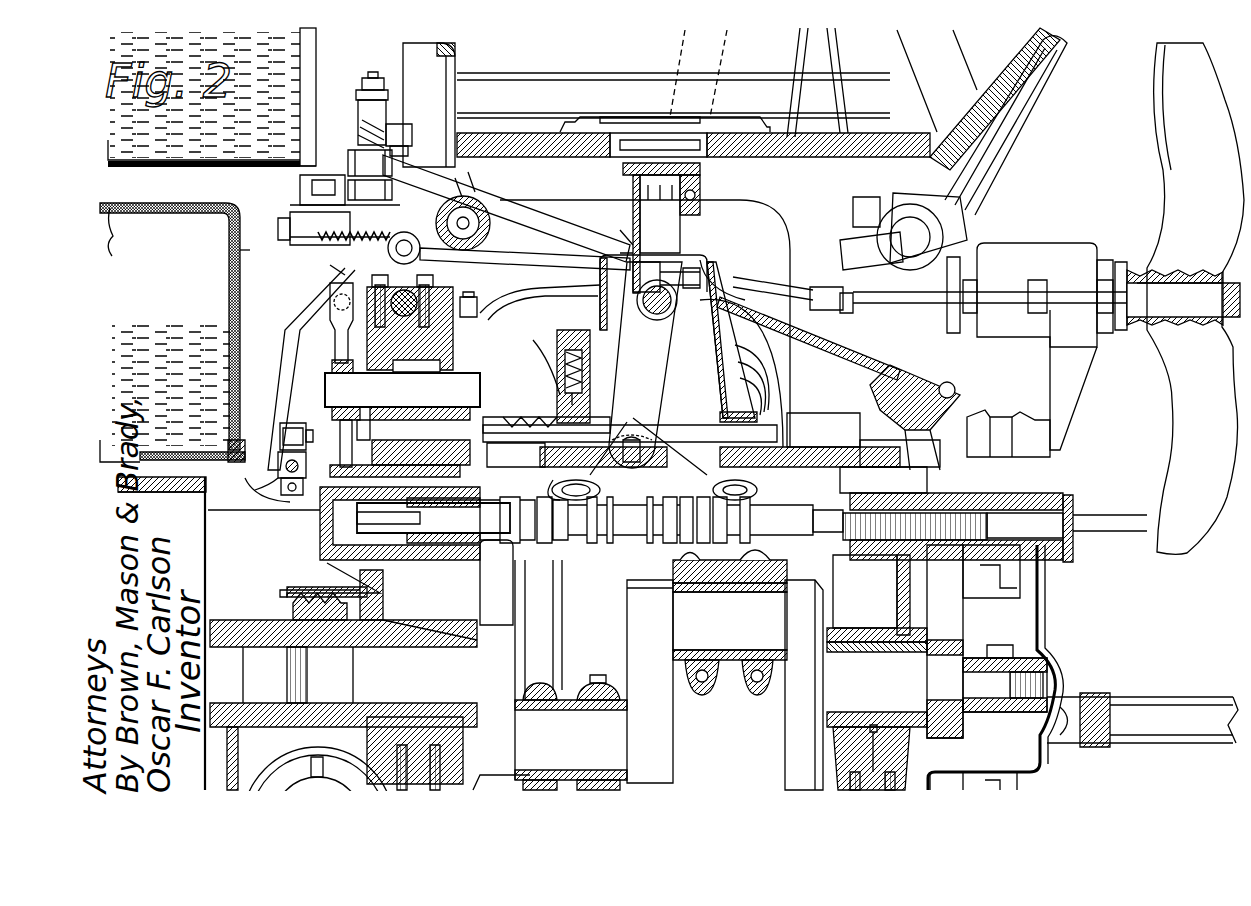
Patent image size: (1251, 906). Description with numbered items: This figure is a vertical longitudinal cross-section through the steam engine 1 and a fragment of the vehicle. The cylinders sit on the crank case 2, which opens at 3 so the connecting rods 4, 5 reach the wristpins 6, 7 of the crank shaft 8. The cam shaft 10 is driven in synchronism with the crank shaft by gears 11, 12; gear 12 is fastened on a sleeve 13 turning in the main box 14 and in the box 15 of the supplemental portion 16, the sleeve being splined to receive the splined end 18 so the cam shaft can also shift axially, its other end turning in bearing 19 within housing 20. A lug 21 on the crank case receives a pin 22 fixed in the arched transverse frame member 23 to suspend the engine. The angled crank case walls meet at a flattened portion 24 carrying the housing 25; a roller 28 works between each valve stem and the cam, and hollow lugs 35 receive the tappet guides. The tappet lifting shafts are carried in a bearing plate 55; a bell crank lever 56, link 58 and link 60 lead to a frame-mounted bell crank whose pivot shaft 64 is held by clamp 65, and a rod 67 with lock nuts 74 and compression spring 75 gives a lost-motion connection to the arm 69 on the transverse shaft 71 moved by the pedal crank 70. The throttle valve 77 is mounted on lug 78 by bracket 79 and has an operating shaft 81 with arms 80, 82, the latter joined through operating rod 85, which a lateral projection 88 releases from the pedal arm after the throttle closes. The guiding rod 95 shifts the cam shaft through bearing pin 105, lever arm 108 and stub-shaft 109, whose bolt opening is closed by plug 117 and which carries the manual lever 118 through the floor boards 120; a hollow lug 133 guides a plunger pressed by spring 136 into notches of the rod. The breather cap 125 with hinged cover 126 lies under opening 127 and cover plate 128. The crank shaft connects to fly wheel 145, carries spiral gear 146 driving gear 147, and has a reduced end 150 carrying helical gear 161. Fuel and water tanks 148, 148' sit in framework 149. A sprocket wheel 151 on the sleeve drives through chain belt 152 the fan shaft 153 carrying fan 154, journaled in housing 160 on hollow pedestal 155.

The steam engine 1 is at (735, 215).
The crank case 2 is at (340, 590).
The opening 3 is at (565, 575).
The connecting rod 4 is at (540, 630).
The connecting rod 5 is at (680, 575).
The wristpin 6 is at (720, 670).
The wristpin 7 is at (490, 765).
The crank shaft 8 is at (480, 660).
The cam shaft 10 is at (770, 530).
The gear 11 is at (955, 740).
The gear 12 is at (940, 570).
The sleeve 13 is at (880, 500).
The main box 14 is at (900, 510).
The box 15 is at (1050, 495).
The supplemental portion of the crank case 16 is at (1045, 600).
The splined end of the cam shaft 18 is at (845, 545).
The bearing 19 is at (553, 482).
The housing 20 is at (390, 565).
The lug 21 is at (430, 355).
The pin 22 is at (388, 382).
The transverse frame member 23 is at (340, 332).
The flattened portion 24 is at (830, 520).
The housing 25 is at (720, 337).
The roller 28 is at (625, 428).
The hollow lug 35 is at (560, 515).
The bearing plate 55 is at (310, 500).
The bell crank lever 56 is at (300, 432).
The link 58 is at (292, 478).
The link 60 is at (340, 342).
The shaft 64 is at (372, 305).
The clamp 65 is at (445, 296).
The rod 67 is at (820, 322).
The arm 69 is at (930, 255).
The pedal crank 70 is at (1030, 108).
The transverse shaft 71 is at (880, 240).
The lock nuts 74 is at (290, 238).
The compression spring 75 is at (340, 237).
The throttle valve 77 is at (290, 195).
The lug 78 is at (520, 230).
The bracket 79 is at (510, 185).
The arm 80 is at (390, 112).
The operating shaft 81 is at (372, 80).
The arm 82 is at (412, 132).
The operating rod 85 is at (850, 352).
The lateral projection 88 is at (900, 390).
The guiding rod 95 is at (525, 410).
The bearing pin 105 is at (690, 467).
The lever arm 108 is at (640, 395).
The stub-shaft 109 is at (595, 260).
The plug 117 is at (720, 266).
The manual lever 118 is at (692, 30).
The floor boards 120 is at (850, 140).
The breather cap 125 is at (630, 170).
The hinged cover 126 is at (690, 125).
The opening 127 is at (700, 140).
The cover plate 128 is at (625, 110).
The hollow lug 133 is at (585, 388).
The spring 136 is at (590, 362).
The fly wheel 145 is at (190, 548).
The spiral gear 146 is at (330, 700).
The gear 147 is at (290, 752).
The fuel tank 148 is at (232, 97).
The water tank 148' is at (236, 262).
The framework 149 is at (300, 280).
The reduced diameter portion 150 is at (995, 680).
The sprocket wheel 151 is at (975, 590).
The chain belt 152 is at (1005, 435).
The fan shaft 153 is at (1150, 275).
The fan 154 is at (1185, 165).
The hollow pedestal 155 is at (1040, 418).
The housing 160 is at (1040, 255).
The helical gear 161 is at (1000, 710).